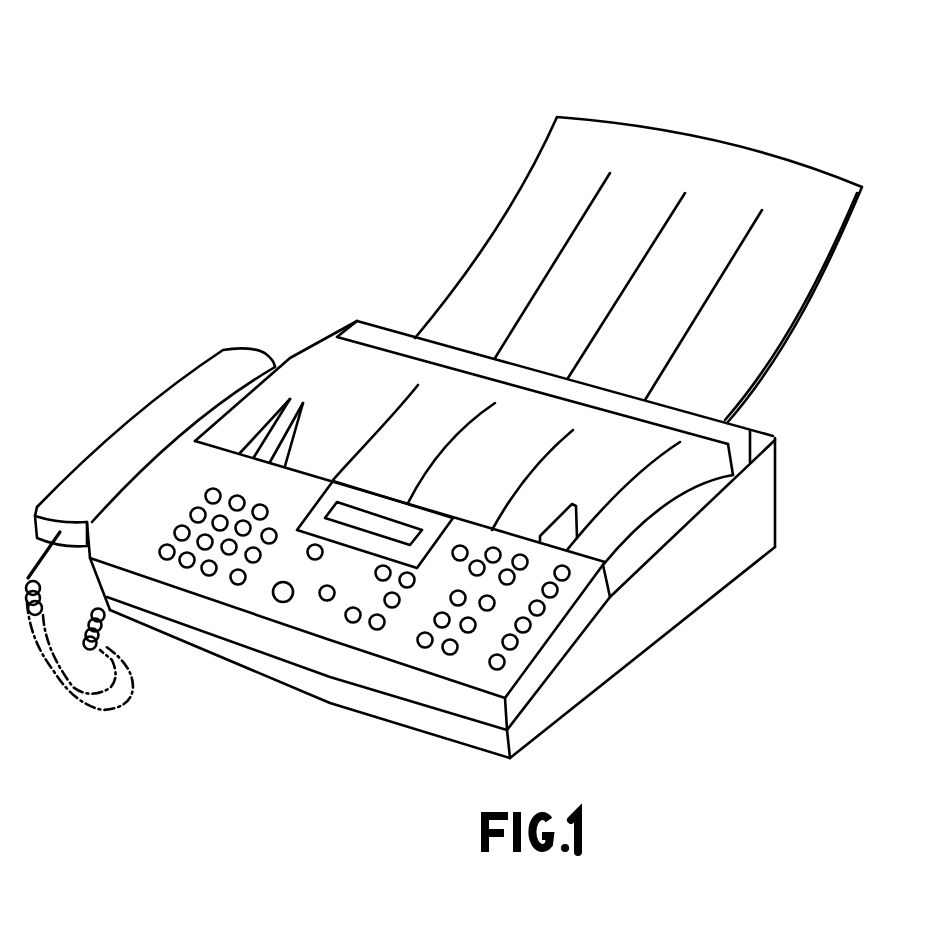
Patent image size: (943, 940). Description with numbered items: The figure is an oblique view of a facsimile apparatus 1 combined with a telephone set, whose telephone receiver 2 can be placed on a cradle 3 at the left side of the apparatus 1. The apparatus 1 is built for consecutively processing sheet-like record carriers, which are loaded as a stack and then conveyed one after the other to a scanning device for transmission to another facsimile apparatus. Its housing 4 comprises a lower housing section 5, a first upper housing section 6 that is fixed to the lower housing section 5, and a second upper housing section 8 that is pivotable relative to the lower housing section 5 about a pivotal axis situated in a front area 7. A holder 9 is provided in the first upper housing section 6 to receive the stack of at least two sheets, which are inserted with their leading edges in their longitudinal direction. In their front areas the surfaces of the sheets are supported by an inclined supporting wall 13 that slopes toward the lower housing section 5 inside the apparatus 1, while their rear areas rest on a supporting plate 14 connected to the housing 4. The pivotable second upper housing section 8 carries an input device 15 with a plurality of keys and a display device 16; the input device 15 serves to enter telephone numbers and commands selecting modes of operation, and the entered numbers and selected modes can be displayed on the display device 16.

The facsimile apparatus 1 is at (368, 97).
The telephone receiver 2 is at (232, 351).
The cradle 3 is at (73, 570).
The housing 4 is at (620, 604).
The lower housing section 5 is at (751, 579).
The first upper housing section 6 is at (360, 318).
The front area 7 is at (428, 714).
The second upper housing section 8 is at (165, 450).
The holder 9 is at (283, 454).
The inclined supporting wall 13 is at (480, 467).
The supporting plate 14 is at (699, 148).
The input device 15 is at (175, 574).
The display device 16 is at (313, 493).